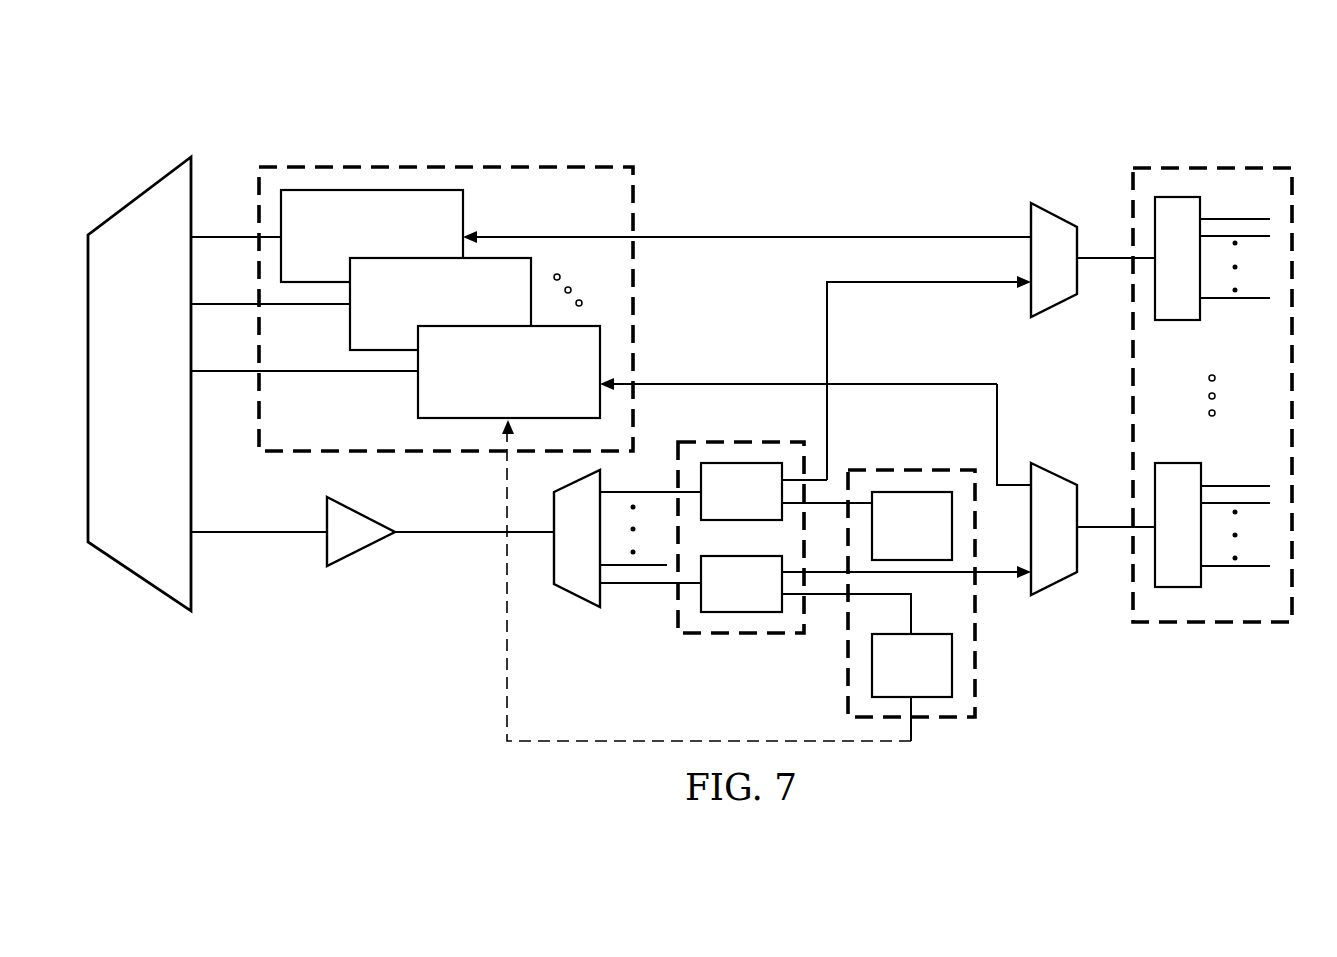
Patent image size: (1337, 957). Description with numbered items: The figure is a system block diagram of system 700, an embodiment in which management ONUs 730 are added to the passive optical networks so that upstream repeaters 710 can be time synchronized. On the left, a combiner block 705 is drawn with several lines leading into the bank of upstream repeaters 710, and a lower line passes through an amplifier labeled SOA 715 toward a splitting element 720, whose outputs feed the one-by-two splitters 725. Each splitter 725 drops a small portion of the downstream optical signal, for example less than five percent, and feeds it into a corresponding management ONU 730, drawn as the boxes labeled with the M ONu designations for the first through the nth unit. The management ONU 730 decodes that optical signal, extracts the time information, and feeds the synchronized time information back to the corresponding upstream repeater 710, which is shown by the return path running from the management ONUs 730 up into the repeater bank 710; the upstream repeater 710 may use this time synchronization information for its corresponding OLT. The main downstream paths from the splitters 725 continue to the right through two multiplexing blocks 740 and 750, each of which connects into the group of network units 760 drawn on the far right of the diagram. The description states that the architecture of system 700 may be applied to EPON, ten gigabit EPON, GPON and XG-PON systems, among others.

The system diagram 700 is at (194, 75).
The optical splitter/combiner 705 is at (140, 578).
The upstream repeater 710 is at (428, 158).
The semiconductor optical amplifier (SOA) 715 is at (362, 552).
The demultiplexer 720 is at (572, 597).
The 1×2 splitter 725 is at (743, 644).
The management ONU 730 is at (984, 672).
The multiplexer 740 is at (1055, 210).
The multiplexer 750 is at (1055, 585).
The optical network units 760 is at (1229, 158).